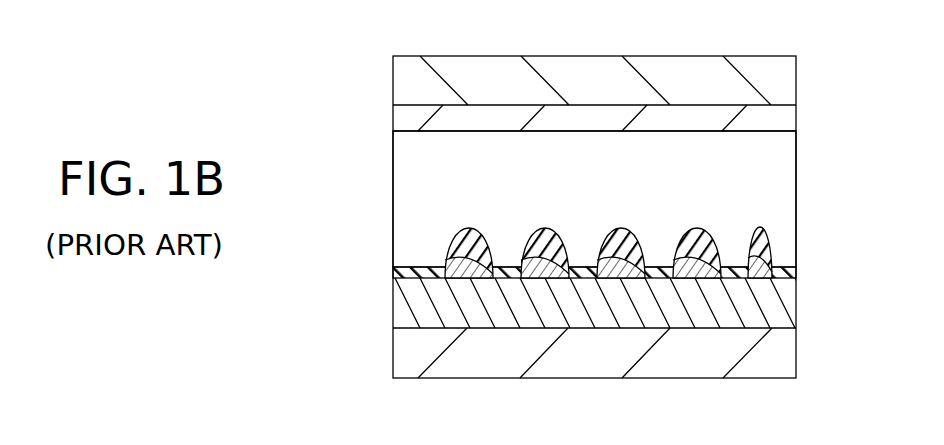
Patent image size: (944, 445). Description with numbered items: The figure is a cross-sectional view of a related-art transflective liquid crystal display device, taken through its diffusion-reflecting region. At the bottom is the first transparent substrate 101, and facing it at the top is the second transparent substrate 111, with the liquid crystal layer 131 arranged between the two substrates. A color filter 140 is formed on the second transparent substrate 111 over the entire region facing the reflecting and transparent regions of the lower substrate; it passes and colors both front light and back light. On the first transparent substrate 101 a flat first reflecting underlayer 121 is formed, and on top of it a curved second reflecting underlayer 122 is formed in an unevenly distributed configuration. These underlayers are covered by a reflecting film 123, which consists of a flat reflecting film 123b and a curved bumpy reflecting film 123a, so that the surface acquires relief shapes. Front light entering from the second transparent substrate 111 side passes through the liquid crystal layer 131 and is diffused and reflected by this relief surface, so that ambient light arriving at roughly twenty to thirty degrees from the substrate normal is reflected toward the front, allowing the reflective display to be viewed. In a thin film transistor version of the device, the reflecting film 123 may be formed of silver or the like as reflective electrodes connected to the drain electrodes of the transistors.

The second transparent substrate 111 is at (403, 78).
The color filter 140 is at (403, 114).
The liquid crystal layer 131 is at (405, 160).
The reflecting film 123 is at (512, 235).
The flat reflecting film 123b is at (505, 265).
The curved bumpy reflecting film 123a is at (450, 245).
The second reflecting underlayer 122 is at (444, 273).
The first reflecting underlayer 121 is at (403, 303).
The first transparent substrate 101 is at (403, 352).